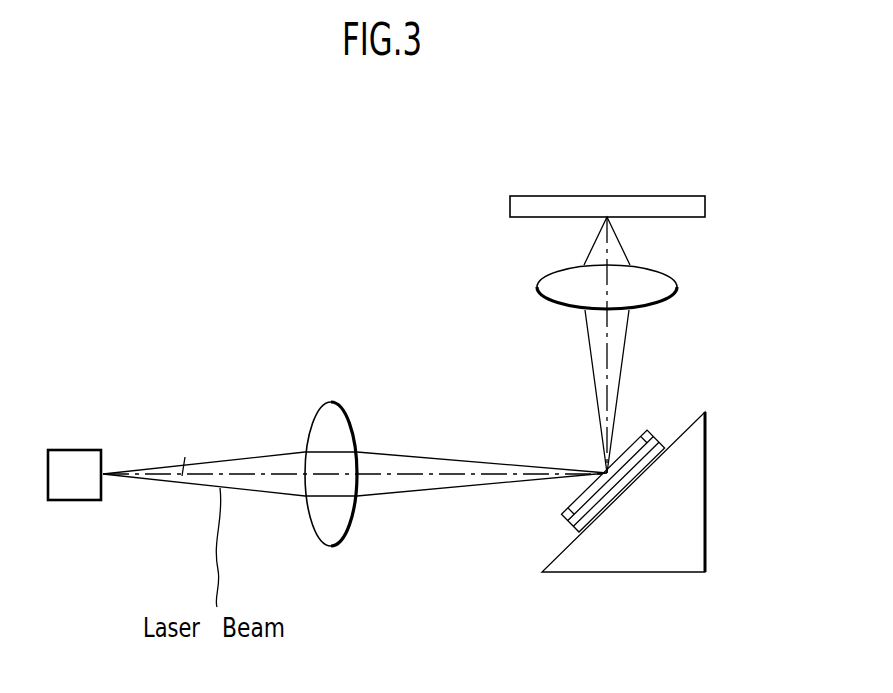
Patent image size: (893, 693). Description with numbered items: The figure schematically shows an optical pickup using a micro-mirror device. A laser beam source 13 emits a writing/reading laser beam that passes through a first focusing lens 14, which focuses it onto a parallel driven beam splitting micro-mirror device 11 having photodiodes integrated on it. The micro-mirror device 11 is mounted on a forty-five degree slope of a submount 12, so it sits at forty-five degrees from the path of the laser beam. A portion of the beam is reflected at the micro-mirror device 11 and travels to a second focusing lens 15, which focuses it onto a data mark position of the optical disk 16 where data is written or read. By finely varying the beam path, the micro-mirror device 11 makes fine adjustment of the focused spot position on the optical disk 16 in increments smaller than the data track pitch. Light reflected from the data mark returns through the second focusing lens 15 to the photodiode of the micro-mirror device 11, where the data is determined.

The parallel driven beam splitting micro-mirror device 11 is at (673, 423).
The submount 12 is at (690, 510).
The laser beam source 13 is at (78, 458).
The first focusing lens 14 is at (328, 415).
The second focusing lens 15 is at (547, 288).
The optical disk 16 is at (520, 207).